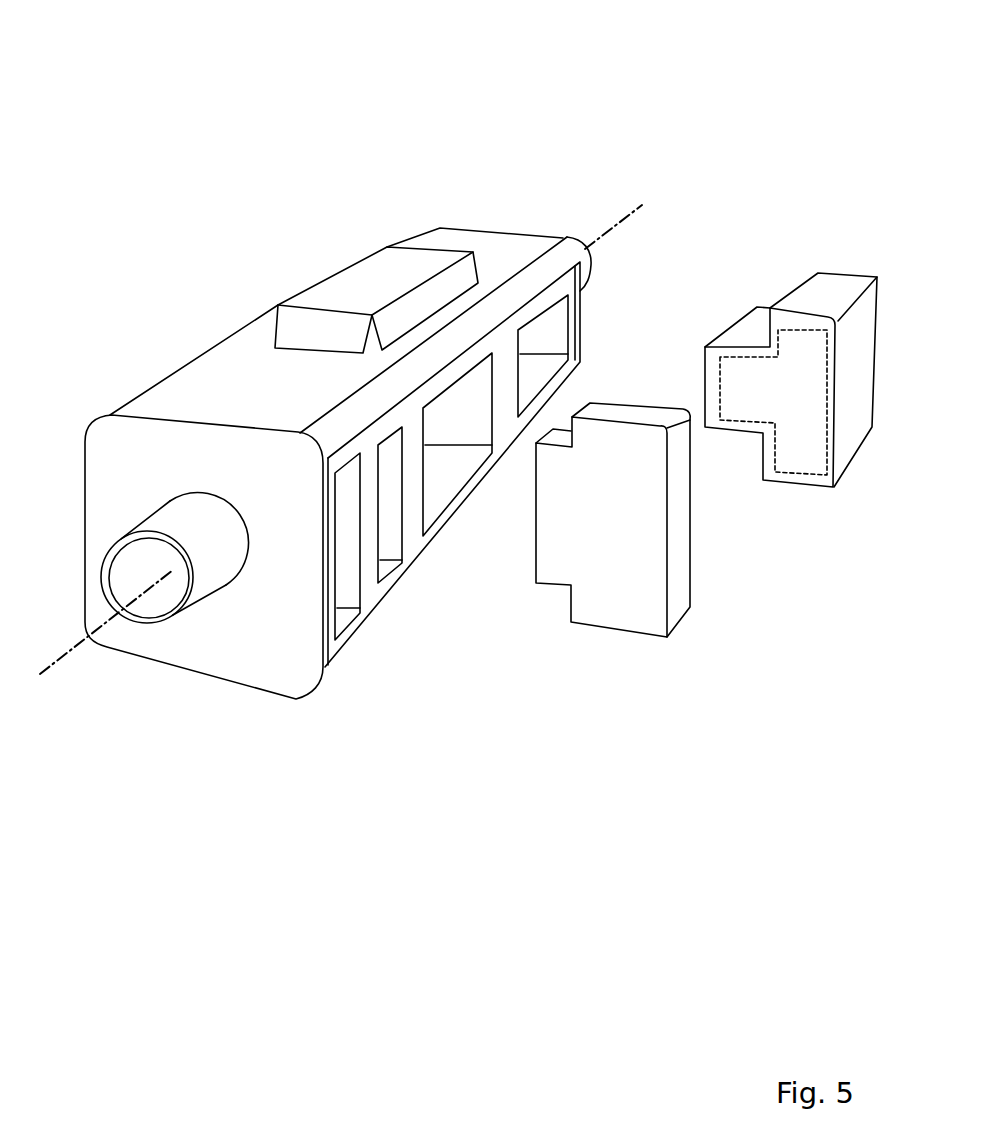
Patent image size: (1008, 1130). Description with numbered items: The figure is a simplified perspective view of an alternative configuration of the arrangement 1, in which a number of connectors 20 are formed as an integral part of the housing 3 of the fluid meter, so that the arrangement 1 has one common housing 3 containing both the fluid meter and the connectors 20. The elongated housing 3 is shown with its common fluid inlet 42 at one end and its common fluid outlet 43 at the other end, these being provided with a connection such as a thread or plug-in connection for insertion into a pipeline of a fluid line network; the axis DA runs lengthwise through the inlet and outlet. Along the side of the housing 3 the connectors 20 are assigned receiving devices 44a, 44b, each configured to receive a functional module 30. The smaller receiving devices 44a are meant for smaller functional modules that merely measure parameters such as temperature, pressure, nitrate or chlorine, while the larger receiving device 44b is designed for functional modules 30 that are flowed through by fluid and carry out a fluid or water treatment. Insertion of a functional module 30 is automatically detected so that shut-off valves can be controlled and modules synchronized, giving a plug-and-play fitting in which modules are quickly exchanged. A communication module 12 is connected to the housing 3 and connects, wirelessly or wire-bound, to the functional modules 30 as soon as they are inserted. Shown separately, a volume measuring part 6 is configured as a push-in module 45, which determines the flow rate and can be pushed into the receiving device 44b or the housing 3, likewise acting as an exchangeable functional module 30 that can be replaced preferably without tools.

The arrangement 1 is at (450, 36).
The housing 3 is at (453, 230).
The communication module 12 is at (363, 273).
The connectors 20 is at (402, 577).
The functional module 30 is at (617, 607).
The fluid inlet 42 is at (170, 590).
The fluid outlet 43 is at (568, 237).
The receiving device 44a is at (350, 583).
The receiving device 44b is at (560, 323).
The push-in module 45 is at (828, 282).
The volume measuring part 6 is at (805, 470).
The axis DA is at (70, 650).